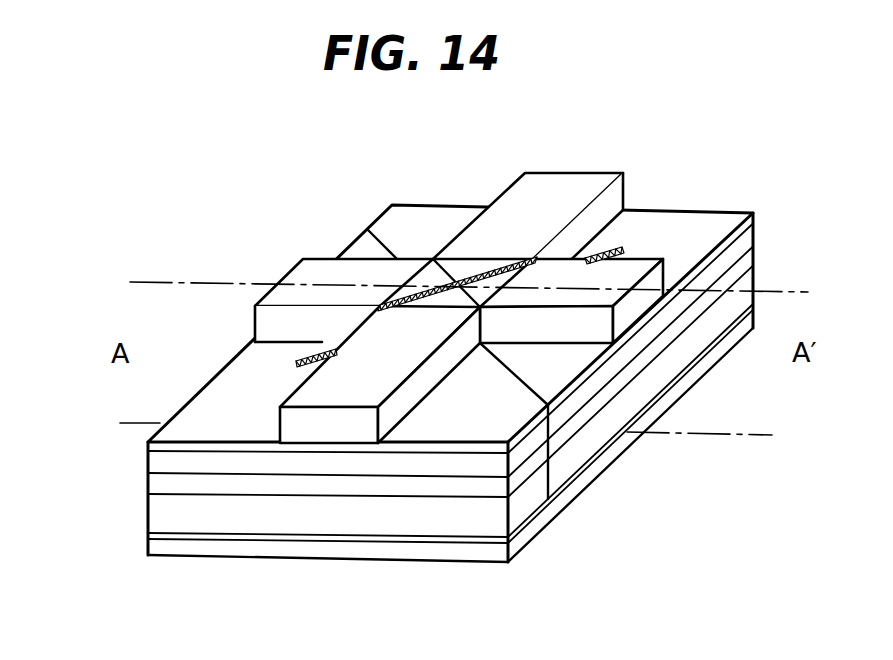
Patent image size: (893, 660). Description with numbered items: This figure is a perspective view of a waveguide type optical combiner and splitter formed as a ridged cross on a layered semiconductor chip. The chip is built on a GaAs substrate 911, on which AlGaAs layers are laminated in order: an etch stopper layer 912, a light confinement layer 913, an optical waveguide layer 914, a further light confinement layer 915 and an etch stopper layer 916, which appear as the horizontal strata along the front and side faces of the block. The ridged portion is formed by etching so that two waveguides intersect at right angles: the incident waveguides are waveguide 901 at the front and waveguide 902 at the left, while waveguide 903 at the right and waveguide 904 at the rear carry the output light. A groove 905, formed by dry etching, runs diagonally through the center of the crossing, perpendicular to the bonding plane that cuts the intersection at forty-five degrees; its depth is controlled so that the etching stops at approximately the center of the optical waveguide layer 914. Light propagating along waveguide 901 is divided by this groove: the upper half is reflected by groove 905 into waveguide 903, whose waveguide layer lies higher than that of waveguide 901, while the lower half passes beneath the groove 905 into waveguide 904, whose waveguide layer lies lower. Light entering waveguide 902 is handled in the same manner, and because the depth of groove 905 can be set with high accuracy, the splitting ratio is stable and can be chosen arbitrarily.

The incident waveguide 901 is at (310, 420).
The incident waveguide 902 is at (304, 273).
The waveguide 903 is at (619, 278).
The waveguide 904 is at (567, 182).
The groove 905 is at (431, 288).
The GaAs substrate 911 is at (148, 548).
The etch stopper layer 912 is at (148, 536).
The light confinement layer 913 is at (148, 511).
The optical waveguide layer 914 is at (148, 487).
The light confinement layer 915 is at (148, 461).
The etch stopper layer 916 is at (148, 445).